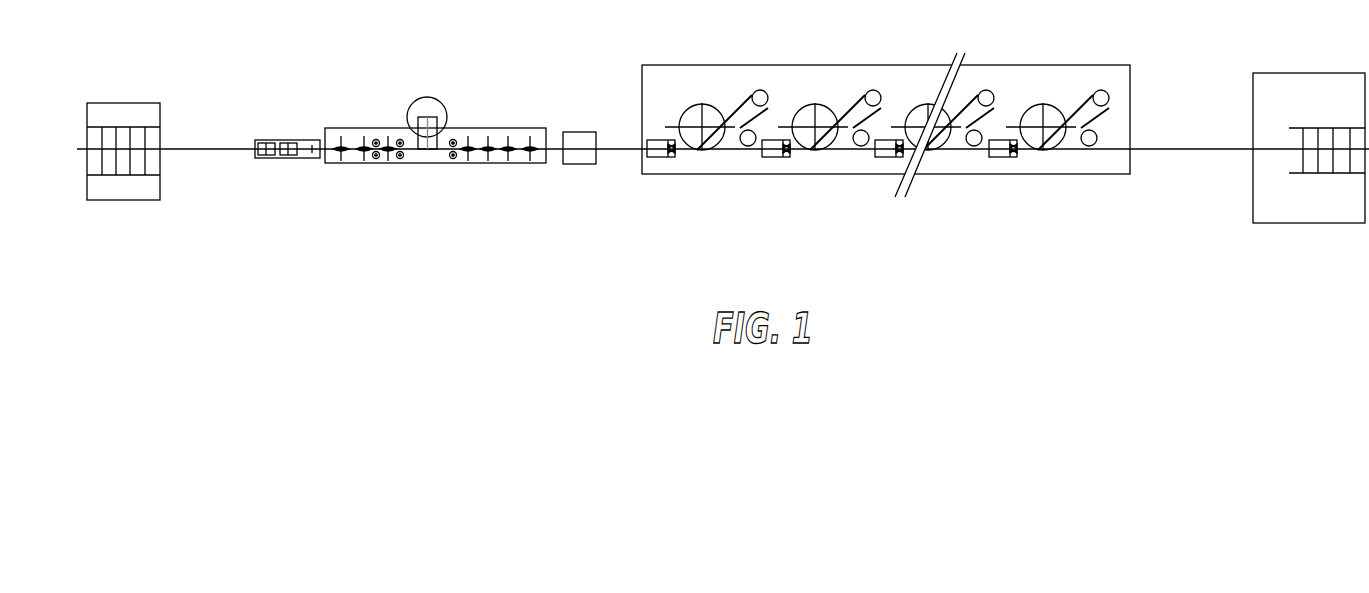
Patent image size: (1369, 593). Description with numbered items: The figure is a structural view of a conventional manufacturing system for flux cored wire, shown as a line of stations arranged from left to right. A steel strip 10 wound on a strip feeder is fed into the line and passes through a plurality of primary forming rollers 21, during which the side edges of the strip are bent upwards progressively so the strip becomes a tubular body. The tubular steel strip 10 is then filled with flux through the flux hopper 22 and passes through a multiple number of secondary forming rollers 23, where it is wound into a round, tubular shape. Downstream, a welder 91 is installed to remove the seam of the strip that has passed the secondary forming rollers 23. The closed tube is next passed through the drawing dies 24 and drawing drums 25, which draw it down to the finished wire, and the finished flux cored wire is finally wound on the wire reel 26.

The steel strip 10 is at (200, 150).
The primary forming rollers 21 is at (370, 137).
The flux hopper 22 is at (428, 106).
The secondary forming rollers 23 is at (483, 158).
The welder 91 is at (580, 140).
The drawing dies 24 is at (656, 158).
The drawing drums 25 is at (712, 112).
The wire reel 26 is at (1340, 175).